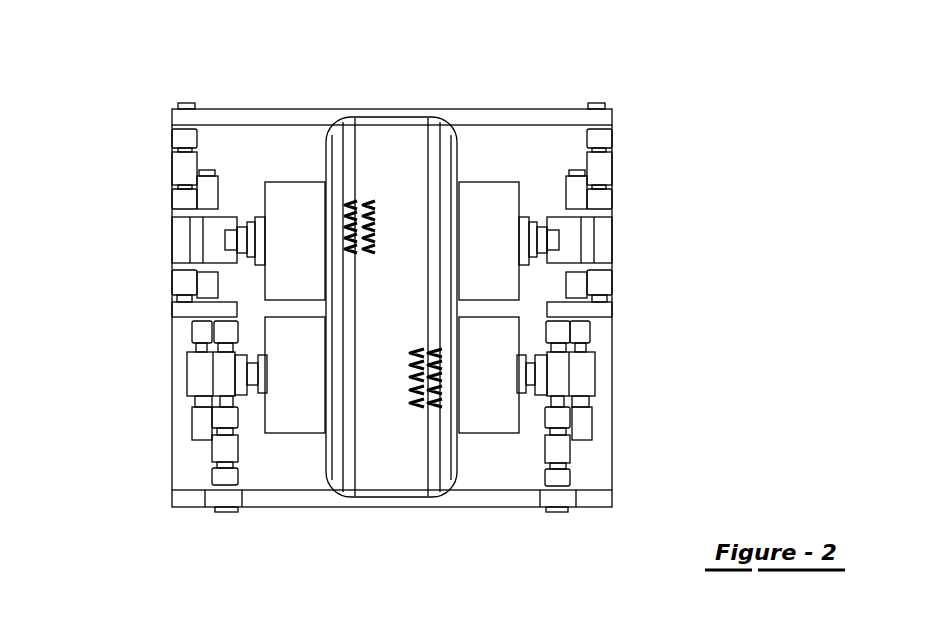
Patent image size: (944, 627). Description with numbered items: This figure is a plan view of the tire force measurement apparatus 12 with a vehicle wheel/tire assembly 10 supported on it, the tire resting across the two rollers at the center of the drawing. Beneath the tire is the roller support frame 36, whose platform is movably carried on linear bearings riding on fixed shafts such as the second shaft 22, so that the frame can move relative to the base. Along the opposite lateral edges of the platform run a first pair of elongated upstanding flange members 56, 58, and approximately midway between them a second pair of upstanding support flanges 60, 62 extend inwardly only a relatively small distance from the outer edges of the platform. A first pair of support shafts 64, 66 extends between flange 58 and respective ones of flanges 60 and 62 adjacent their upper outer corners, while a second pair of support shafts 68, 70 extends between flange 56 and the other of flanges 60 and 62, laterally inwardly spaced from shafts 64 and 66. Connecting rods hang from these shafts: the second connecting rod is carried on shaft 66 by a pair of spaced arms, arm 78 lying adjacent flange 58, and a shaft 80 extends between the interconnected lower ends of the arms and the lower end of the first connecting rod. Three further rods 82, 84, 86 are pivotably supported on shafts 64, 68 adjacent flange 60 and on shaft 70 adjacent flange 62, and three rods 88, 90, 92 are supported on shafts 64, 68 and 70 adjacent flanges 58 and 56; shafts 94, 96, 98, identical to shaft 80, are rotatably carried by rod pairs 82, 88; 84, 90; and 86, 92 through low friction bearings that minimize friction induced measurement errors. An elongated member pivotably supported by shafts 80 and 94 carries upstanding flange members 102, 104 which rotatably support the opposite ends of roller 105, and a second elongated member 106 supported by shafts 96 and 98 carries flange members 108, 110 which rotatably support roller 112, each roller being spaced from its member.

The vehicle wheel/tire assembly 10 is at (401, 136).
The tire force measurement apparatus 12 is at (665, 161).
The second shaft 22 is at (181, 282).
The roller support frame 36 is at (164, 384).
The upstanding flange member 56 is at (297, 498).
The upstanding flange member 58 is at (297, 127).
The upstanding support flange 60 is at (600, 308).
The upstanding support flange 62 is at (178, 310).
The support shaft 64 is at (600, 240).
The support shaft 66 is at (181, 235).
The support shaft 68 is at (555, 452).
The support shaft 70 is at (223, 451).
The arm 78 is at (182, 138).
The shaft 80 is at (181, 218).
The rod 82 is at (600, 283).
The rod 84 is at (582, 337).
The rod 86 is at (201, 333).
The rod 88 is at (599, 140).
The rod 90 is at (563, 477).
The rod 92 is at (214, 475).
The shaft 94 is at (580, 267).
The shaft 96 is at (580, 400).
The shaft 98 is at (197, 402).
The flange member 102 is at (543, 221).
The flange member 104 is at (242, 221).
The roller 105 is at (567, 228).
The second elongated member 106 is at (570, 377).
The flange member 108 is at (543, 387).
The flange member 110 is at (238, 388).
The roller 112 is at (495, 389).